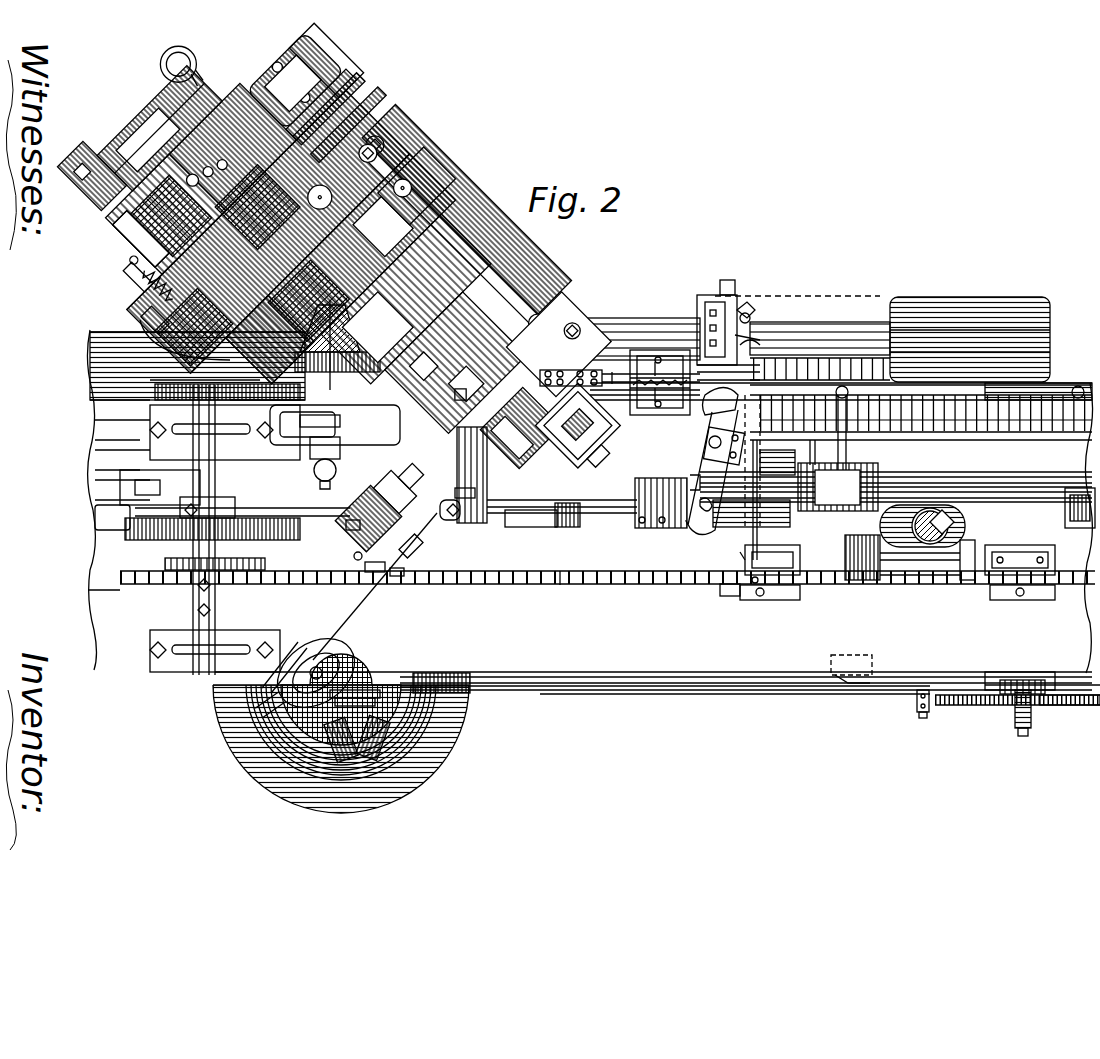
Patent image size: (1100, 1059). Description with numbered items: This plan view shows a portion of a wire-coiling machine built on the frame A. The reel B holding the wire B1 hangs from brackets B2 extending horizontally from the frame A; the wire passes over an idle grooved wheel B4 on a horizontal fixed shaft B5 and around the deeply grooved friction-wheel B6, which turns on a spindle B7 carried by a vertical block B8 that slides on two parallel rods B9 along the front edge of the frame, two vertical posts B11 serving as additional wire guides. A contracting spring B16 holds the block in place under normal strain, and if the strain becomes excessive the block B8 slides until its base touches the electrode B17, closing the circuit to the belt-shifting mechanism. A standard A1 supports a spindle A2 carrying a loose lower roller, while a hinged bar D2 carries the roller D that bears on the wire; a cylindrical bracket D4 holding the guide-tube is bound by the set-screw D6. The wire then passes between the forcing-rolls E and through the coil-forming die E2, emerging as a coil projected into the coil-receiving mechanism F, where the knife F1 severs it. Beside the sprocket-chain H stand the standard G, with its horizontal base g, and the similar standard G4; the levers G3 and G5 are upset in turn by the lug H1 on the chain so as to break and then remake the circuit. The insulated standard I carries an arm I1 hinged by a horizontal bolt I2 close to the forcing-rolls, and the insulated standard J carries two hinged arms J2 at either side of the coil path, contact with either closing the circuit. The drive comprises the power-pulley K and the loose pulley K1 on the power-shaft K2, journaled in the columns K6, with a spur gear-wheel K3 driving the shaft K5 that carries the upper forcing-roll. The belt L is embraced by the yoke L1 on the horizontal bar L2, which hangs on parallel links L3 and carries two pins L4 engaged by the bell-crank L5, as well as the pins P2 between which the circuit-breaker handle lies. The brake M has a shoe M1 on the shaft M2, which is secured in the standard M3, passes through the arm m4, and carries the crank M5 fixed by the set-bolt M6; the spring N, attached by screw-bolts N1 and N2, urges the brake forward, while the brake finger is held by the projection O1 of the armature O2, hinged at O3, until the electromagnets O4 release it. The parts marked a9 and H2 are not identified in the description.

The frame A is at (589, 495).
The standard A1 is at (375, 562).
The horizontal rigid spindle A2 is at (350, 530).
The reel B is at (455, 728).
The wire B1 is at (628, 692).
The brackets B2 is at (380, 758).
The idle grooved wheel B4 is at (355, 690).
The horizontal fixed shaft B5 is at (368, 700).
The friction-wheel B6 is at (1035, 705).
The horizontal spindle B7 is at (1023, 736).
The vertical block B8 is at (1022, 672).
The parallel rods B9 is at (742, 690).
The vertical posts B11 is at (915, 710).
The contracting spring B16 is at (935, 710).
The electrode B17 is at (855, 680).
The roller D is at (420, 548).
The bar D2 is at (372, 500).
The bracket D4 is at (368, 572).
The set-screw D6 is at (352, 557).
The stud a9 is at (398, 577).
The forcing-roll E is at (505, 450).
The coil-forming die E2 is at (568, 340).
The coil-receiving mechanism F is at (760, 370).
The knife F1 is at (705, 425).
The standard G is at (740, 556).
The lever G3 is at (755, 600).
The standard G4 is at (1022, 585).
The lever G5 is at (1012, 552).
The horizontal base g is at (722, 594).
The sprocket-chain H is at (580, 586).
The lug H1 is at (567, 562).
The shaft H2 is at (120, 578).
The insulated standard I is at (575, 450).
The arm I1 is at (575, 432).
The horizontal bolt I2 is at (550, 455).
The insulated standard J is at (648, 415).
The arms J2 is at (660, 370).
The power-pulley K is at (240, 113).
The loose pulley K1 is at (355, 85).
The power-shaft K2 is at (365, 268).
The spur gear-wheel K3 is at (324, 306).
The shaft K5 is at (406, 299).
The columns K6 is at (412, 185).
The belt L is at (312, 45).
The yoke L1 is at (340, 65).
The horizontal bar L2 is at (420, 165).
The horizontal parallel links L3 is at (372, 145).
The pins L4 is at (342, 102).
The bell-crank L5 is at (348, 120).
The brake M is at (115, 225).
The brake-shoe M1 is at (136, 190).
The shaft M2 is at (215, 352).
The standard M3 is at (189, 308).
The crank M5 is at (145, 112).
The set-bolt M6 is at (92, 162).
The arm m4 is at (172, 85).
The contracting spring N is at (149, 293).
The screw-bolt N1 is at (135, 282).
The screw-bolt N2 is at (162, 318).
The projection O1 is at (193, 178).
The armature O2 is at (210, 160).
The hinge O3 is at (228, 155).
The electromagnets O4 is at (158, 283).
The pins P2 is at (402, 215).